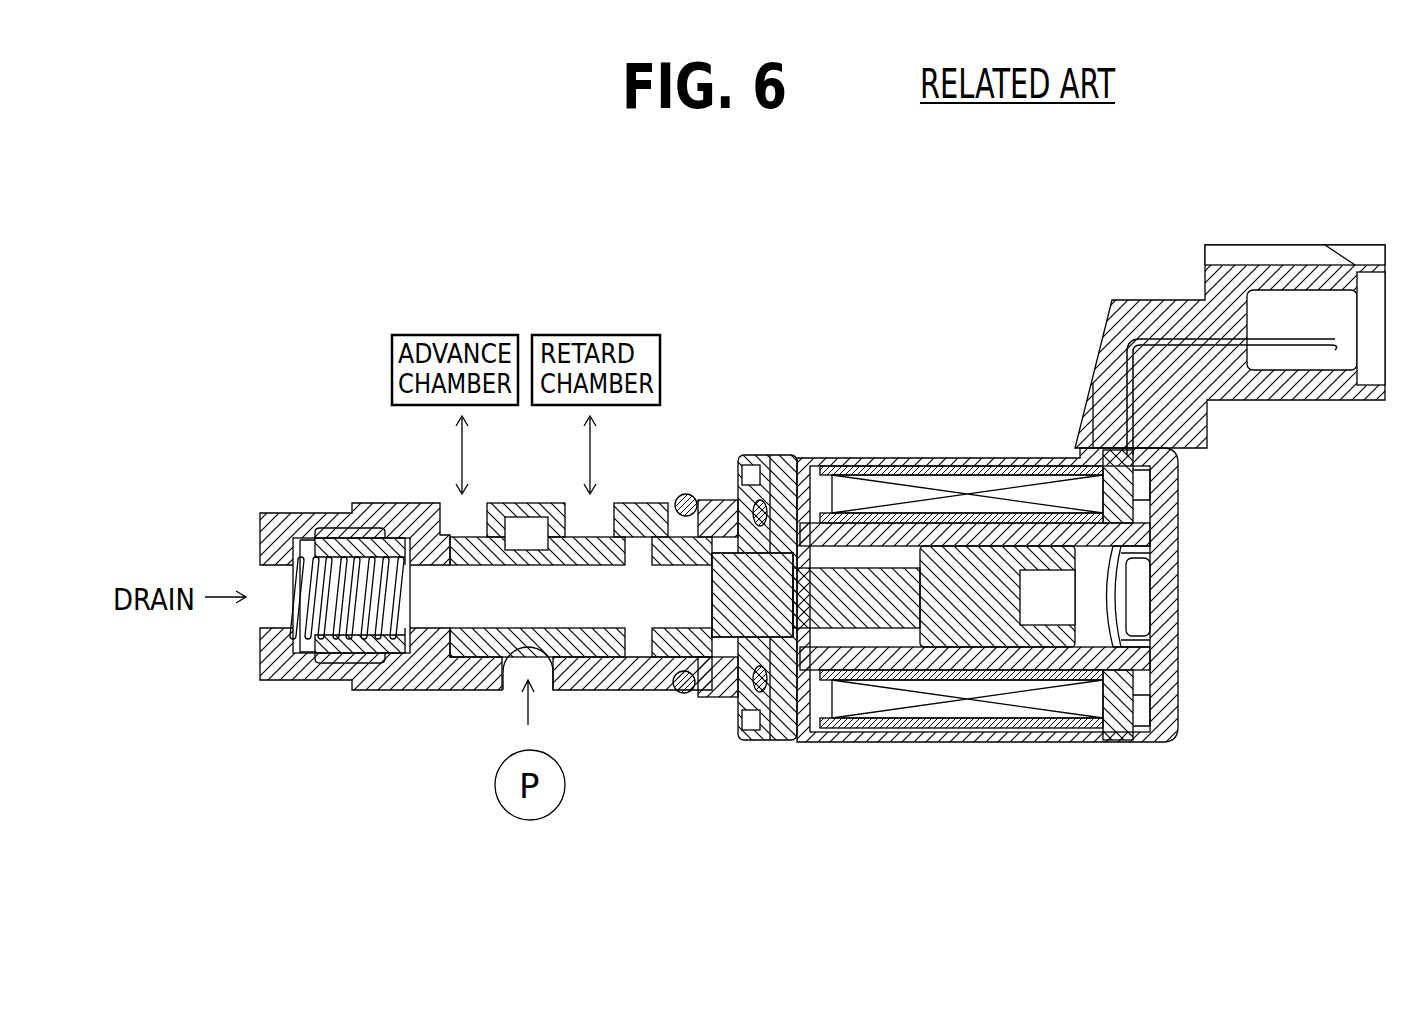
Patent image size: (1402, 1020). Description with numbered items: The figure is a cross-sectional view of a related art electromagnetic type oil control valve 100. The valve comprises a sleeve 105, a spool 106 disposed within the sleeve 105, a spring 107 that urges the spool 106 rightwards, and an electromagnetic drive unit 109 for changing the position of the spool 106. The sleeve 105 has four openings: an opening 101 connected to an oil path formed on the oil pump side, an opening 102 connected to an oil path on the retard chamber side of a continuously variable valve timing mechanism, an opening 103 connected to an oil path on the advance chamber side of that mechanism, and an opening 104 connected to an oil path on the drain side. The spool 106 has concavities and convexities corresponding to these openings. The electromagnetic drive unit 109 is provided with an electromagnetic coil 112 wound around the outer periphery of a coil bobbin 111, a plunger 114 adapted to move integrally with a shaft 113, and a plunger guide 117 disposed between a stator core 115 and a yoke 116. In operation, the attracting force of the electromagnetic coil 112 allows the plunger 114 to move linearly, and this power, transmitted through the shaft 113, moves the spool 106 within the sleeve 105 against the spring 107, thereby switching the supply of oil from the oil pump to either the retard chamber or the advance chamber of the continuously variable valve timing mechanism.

The electromagnetic type oil control valve 100 is at (219, 340).
The opening 101 is at (510, 675).
The opening 102 is at (582, 505).
The opening 103 is at (458, 503).
The opening 104 is at (262, 608).
The sleeve 105 is at (280, 513).
The spool 106 is at (598, 652).
The spring 107 is at (262, 530).
The electromagnetic drive unit 109 is at (1190, 754).
The coil bobbin 111 is at (1118, 700).
The electromagnetic coil 112 is at (968, 705).
The shaft 113 is at (862, 600).
The plunger 114 is at (945, 555).
The stator core 115 is at (785, 455).
The yoke 116 is at (1180, 493).
The plunger guide 117 is at (918, 660).